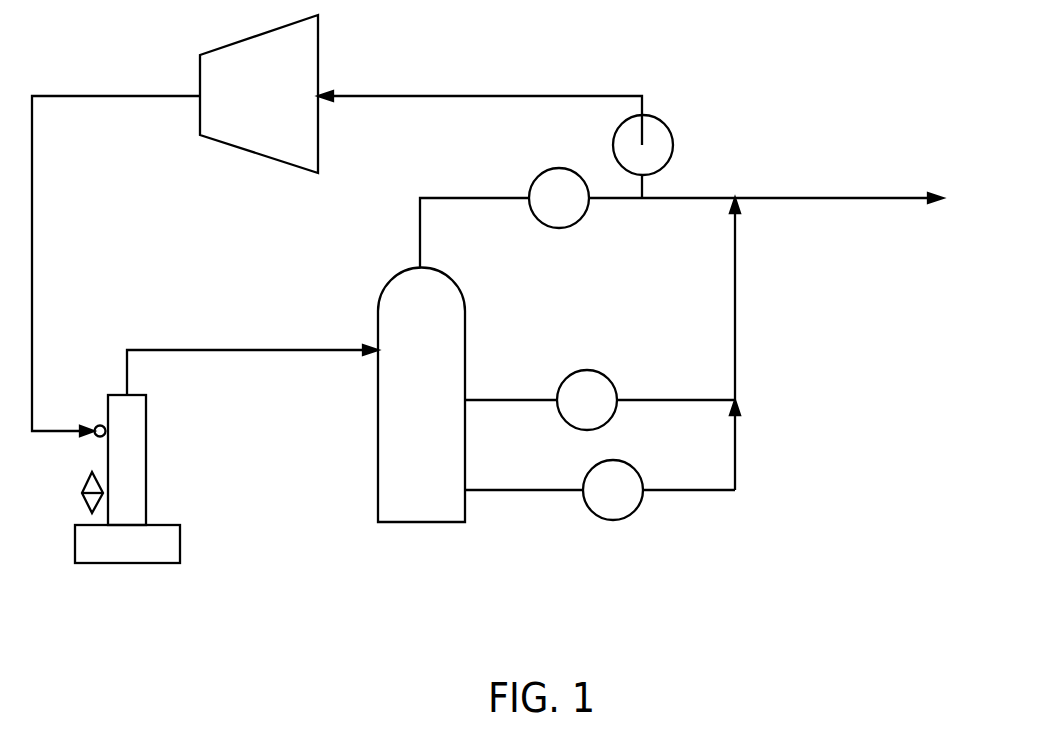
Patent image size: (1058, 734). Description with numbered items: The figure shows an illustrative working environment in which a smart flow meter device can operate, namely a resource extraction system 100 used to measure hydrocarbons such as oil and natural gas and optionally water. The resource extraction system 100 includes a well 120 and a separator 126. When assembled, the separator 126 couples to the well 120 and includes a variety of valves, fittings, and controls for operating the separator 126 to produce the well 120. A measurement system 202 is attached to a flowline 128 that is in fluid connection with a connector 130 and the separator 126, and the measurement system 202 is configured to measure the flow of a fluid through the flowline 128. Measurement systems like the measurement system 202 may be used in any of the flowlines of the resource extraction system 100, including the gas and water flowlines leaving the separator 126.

The resource extraction system 100 is at (487, 301).
The well 120 is at (146, 473).
The separator 126 is at (377, 428).
The flowline 128 is at (642, 401).
The connector 130 is at (240, 349).
The measurement system 202 is at (593, 369).